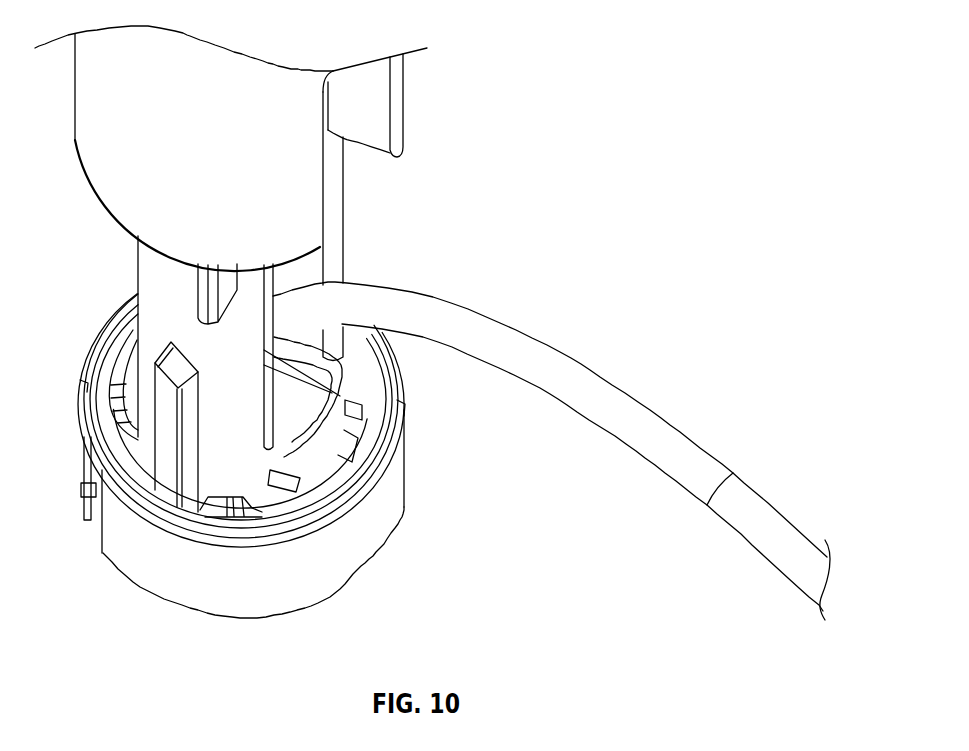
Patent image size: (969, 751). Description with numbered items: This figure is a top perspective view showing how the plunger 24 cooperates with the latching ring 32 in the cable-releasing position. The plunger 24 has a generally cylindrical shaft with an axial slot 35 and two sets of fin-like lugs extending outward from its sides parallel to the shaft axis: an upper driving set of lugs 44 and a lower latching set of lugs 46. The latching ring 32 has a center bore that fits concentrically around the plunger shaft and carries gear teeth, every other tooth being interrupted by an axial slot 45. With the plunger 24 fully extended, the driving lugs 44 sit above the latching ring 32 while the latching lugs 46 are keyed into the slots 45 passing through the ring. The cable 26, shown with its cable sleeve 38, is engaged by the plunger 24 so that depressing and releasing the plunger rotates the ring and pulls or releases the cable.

The plunger 24 is at (93, 143).
The cable 26 is at (525, 346).
The latching ring 32 is at (368, 549).
The axial slot 35 is at (310, 272).
The cable sleeve 38 is at (293, 502).
The driving set of lugs 44 is at (200, 291).
The axial slot 45 is at (207, 483).
The latching set of lugs 46 is at (188, 421).